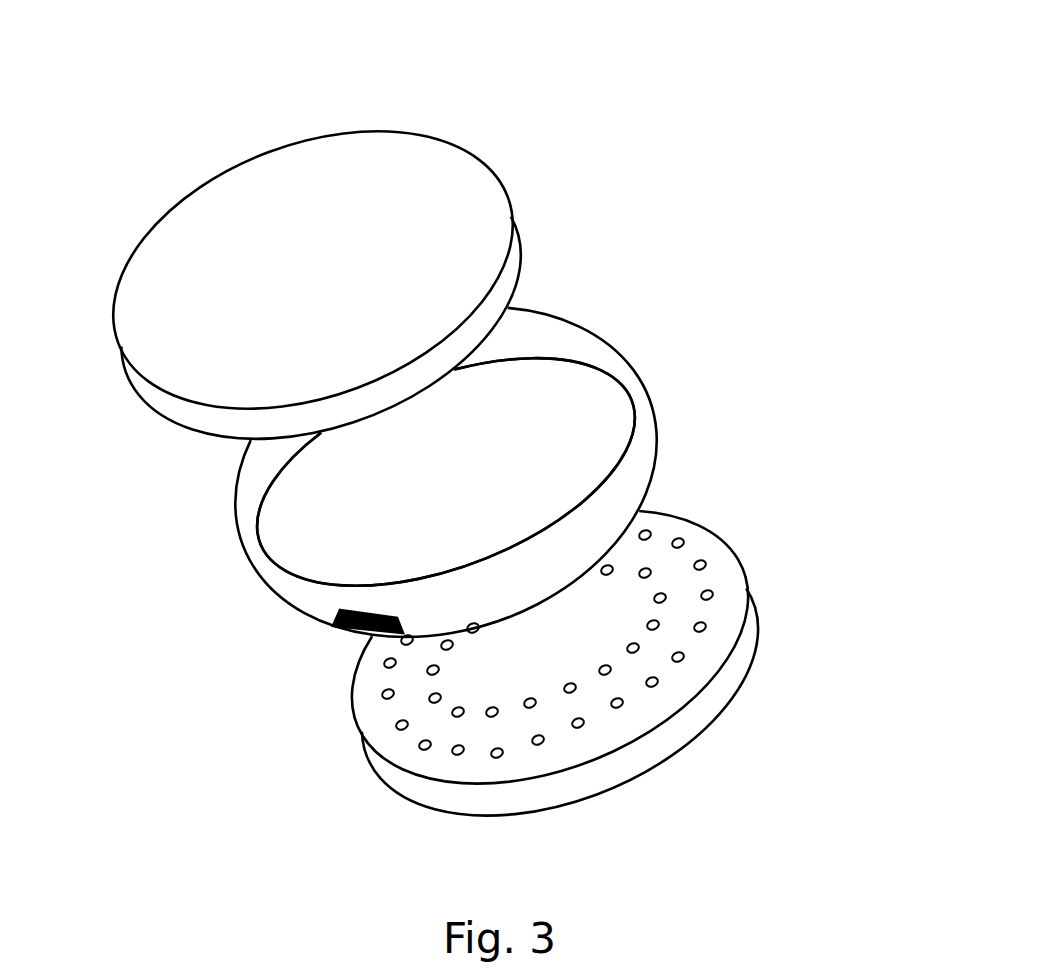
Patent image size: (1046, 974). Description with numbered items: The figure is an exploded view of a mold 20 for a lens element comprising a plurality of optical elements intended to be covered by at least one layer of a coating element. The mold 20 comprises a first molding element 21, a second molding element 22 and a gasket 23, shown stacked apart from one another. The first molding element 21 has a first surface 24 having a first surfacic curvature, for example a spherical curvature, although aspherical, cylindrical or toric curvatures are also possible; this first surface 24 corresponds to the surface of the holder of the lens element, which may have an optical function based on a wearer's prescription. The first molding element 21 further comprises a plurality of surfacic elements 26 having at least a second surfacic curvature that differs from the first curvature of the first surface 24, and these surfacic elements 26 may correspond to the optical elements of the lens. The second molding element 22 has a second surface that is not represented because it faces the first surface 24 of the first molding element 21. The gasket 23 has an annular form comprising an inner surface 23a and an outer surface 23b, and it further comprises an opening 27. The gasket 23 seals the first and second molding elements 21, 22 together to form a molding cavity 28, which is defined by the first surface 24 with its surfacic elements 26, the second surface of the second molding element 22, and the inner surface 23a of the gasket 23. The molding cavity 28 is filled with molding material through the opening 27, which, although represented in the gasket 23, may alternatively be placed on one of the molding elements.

The mold 20 is at (146, 208).
The first molding element 21 is at (648, 631).
The second molding element 22 is at (455, 200).
The gasket 23 is at (487, 453).
The inner surface 23a is at (632, 470).
The outer surface 23b is at (590, 352).
The first surface 24 is at (683, 610).
The surfacic elements 26 is at (648, 572).
The opening 27 is at (352, 635).
The molding cavity 28 is at (352, 533).